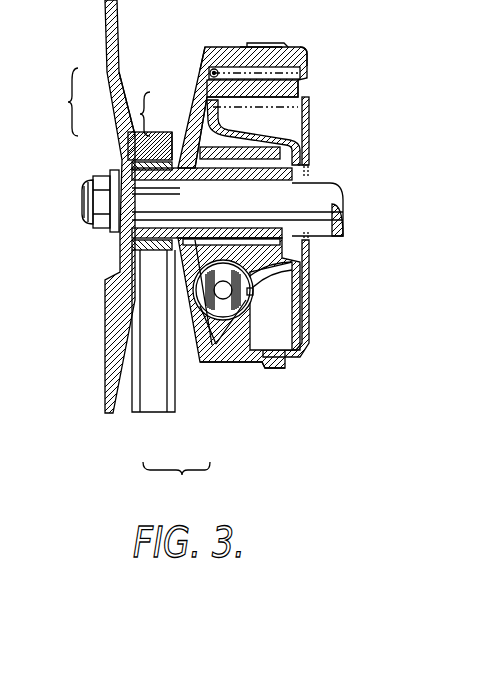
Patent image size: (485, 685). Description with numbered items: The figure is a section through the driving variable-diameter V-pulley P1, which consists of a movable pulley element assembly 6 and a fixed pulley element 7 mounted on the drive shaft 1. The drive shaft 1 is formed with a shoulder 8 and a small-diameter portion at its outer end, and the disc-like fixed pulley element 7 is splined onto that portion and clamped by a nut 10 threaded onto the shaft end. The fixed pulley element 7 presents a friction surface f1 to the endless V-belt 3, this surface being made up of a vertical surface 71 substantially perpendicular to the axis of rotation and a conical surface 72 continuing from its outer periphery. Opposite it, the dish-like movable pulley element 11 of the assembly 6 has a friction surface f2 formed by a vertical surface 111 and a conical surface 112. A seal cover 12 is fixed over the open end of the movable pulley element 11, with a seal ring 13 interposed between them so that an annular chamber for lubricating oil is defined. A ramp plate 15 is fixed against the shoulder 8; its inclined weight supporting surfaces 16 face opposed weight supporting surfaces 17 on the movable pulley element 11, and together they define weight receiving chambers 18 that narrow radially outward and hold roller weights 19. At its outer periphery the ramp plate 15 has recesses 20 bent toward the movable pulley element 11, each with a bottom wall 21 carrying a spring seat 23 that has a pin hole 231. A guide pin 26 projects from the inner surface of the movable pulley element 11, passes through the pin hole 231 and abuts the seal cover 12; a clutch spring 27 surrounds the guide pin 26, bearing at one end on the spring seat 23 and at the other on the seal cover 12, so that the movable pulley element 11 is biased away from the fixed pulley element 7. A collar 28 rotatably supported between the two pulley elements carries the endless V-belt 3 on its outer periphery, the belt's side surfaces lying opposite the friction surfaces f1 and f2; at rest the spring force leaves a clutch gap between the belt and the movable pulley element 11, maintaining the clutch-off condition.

The drive shaft 1 is at (325, 215).
The endless V-belt 3 is at (132, 340).
The movable pulley element assembly 6 is at (212, 366).
The fixed pulley element 7 is at (118, 402).
The shoulder 8 is at (287, 183).
The nut 10 is at (106, 176).
The movable pulley element 11 is at (212, 47).
The seal cover 12 is at (310, 117).
The seal ring 13 is at (278, 43).
The ramp plate 15 is at (305, 162).
The weight supporting surfaces 16 is at (247, 292).
The weight supporting surfaces 17 is at (202, 333).
The weight receiving chambers 18 is at (238, 314).
The roller weights 19 is at (285, 270).
The recesses 20 is at (238, 215).
The bottom wall 21 is at (207, 60).
The spring seat 23 is at (242, 47).
The guide pin 26 is at (298, 90).
The clutch spring 27 is at (296, 63).
The collar 28 is at (136, 246).
The vertical surface 71 is at (130, 135).
The conical surface 72 is at (116, 88).
The vertical surface 111 is at (166, 156).
The conical surface 112 is at (213, 108).
The pin hole 231 is at (210, 73).
The friction surface f1 is at (64, 102).
The friction surface f2 is at (136, 105).
The driving variable-diameter V-pulley P1 is at (176, 483).